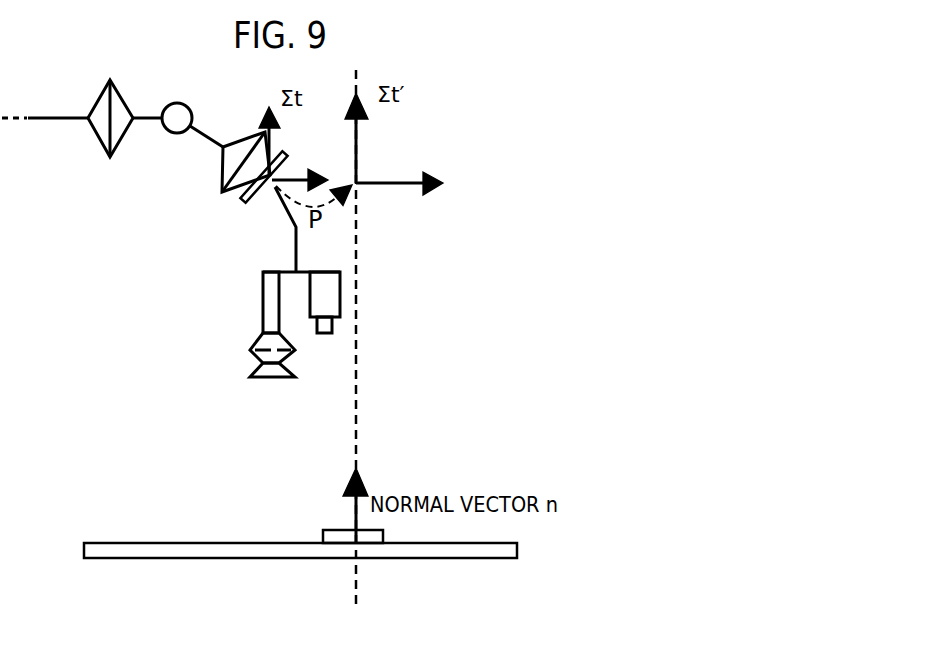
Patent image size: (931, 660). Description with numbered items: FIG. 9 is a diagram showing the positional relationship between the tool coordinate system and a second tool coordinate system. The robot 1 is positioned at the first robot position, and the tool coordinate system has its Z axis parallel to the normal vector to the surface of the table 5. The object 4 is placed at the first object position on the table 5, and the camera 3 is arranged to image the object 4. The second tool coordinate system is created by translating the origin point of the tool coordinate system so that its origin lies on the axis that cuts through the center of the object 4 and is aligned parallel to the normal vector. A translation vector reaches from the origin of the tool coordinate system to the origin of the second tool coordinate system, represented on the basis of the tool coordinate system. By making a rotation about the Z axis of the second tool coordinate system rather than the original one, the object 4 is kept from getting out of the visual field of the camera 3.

The robot 1 is at (47, 119).
The camera 3 is at (323, 272).
The object 4 is at (337, 529).
The table 5 is at (517, 553).